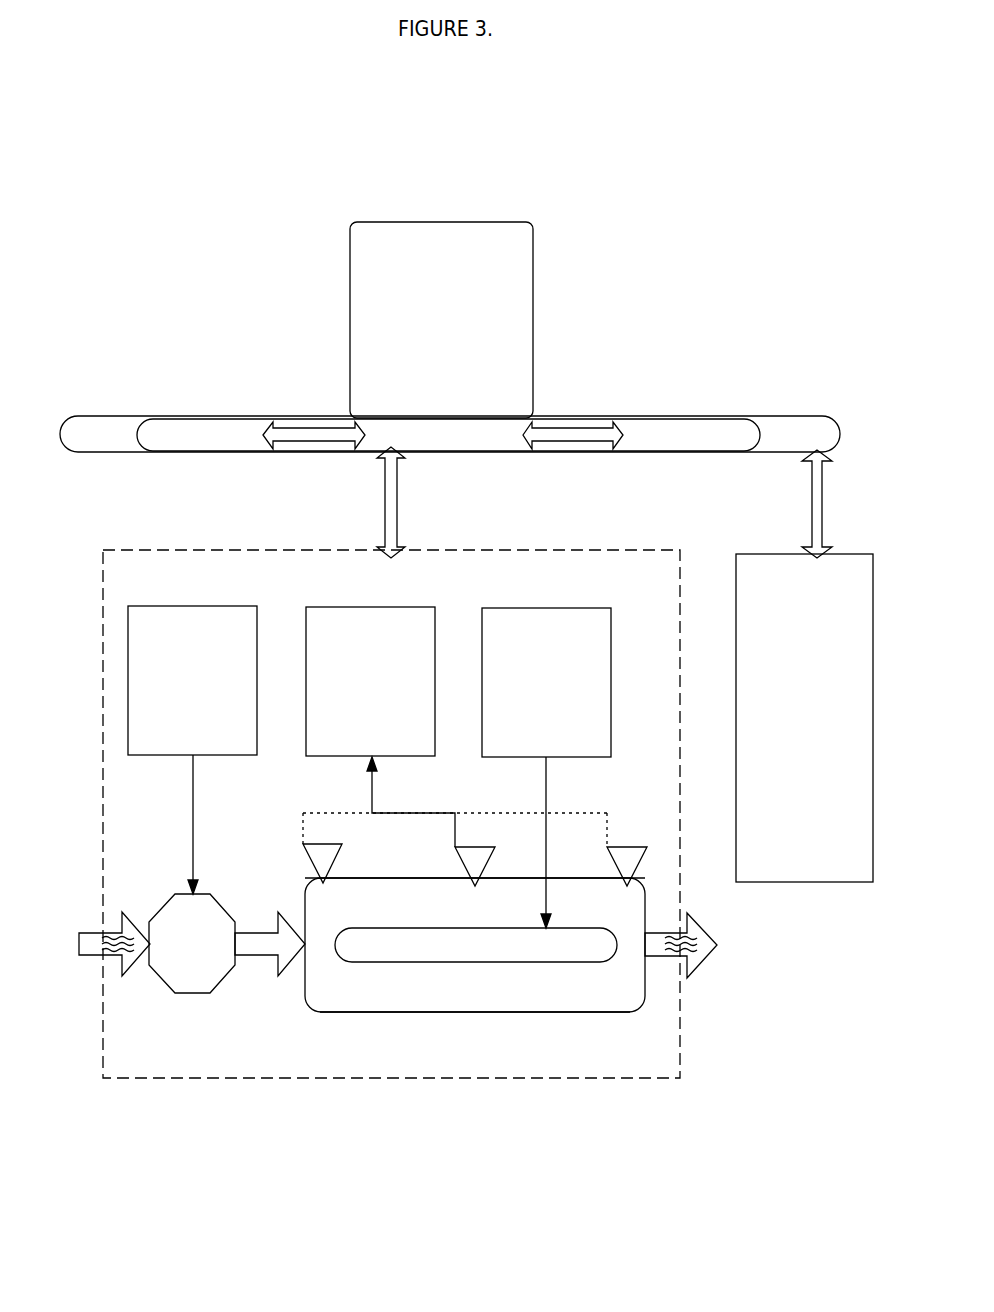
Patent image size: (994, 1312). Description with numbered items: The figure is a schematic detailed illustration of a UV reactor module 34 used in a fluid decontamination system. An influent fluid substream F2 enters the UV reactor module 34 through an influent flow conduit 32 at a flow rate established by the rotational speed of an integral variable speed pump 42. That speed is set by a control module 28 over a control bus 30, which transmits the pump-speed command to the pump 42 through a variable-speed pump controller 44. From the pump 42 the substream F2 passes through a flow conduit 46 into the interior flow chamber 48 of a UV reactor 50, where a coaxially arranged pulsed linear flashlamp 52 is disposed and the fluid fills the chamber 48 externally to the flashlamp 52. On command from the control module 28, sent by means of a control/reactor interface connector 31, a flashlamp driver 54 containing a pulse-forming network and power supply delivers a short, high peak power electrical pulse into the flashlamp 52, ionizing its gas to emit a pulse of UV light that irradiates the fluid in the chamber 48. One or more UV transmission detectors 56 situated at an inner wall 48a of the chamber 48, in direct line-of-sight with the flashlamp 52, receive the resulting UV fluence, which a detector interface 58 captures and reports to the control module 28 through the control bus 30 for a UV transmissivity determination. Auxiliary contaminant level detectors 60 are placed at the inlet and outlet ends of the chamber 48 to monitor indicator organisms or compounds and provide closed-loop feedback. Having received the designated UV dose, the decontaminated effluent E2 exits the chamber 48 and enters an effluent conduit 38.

The control module 28 is at (350, 300).
The control bus 30 is at (250, 453).
The control/reactor interface connector 31 is at (383, 500).
The influent flow conduit 32 is at (97, 933).
The UV reactor module 34 is at (390, 1078).
The effluent conduit 38 is at (700, 968).
The variable speed pump 42 is at (175, 993).
The variable-speed pump controller 44 is at (218, 606).
The flow conduit 46 is at (272, 960).
The interior flow chamber 48 is at (320, 975).
The inner wall 48a is at (392, 878).
The UV reactor 50 is at (405, 1012).
The pulsed linear flashlamp 52 is at (490, 962).
The flashlamp driver 54 is at (572, 608).
The UV transmission detector 56 is at (460, 868).
The detector interface 58 is at (397, 607).
The auxiliary contaminant level detector 60 is at (308, 868).
The influent fluid substream F2 is at (107, 955).
The decontaminated effluent E2 is at (688, 940).